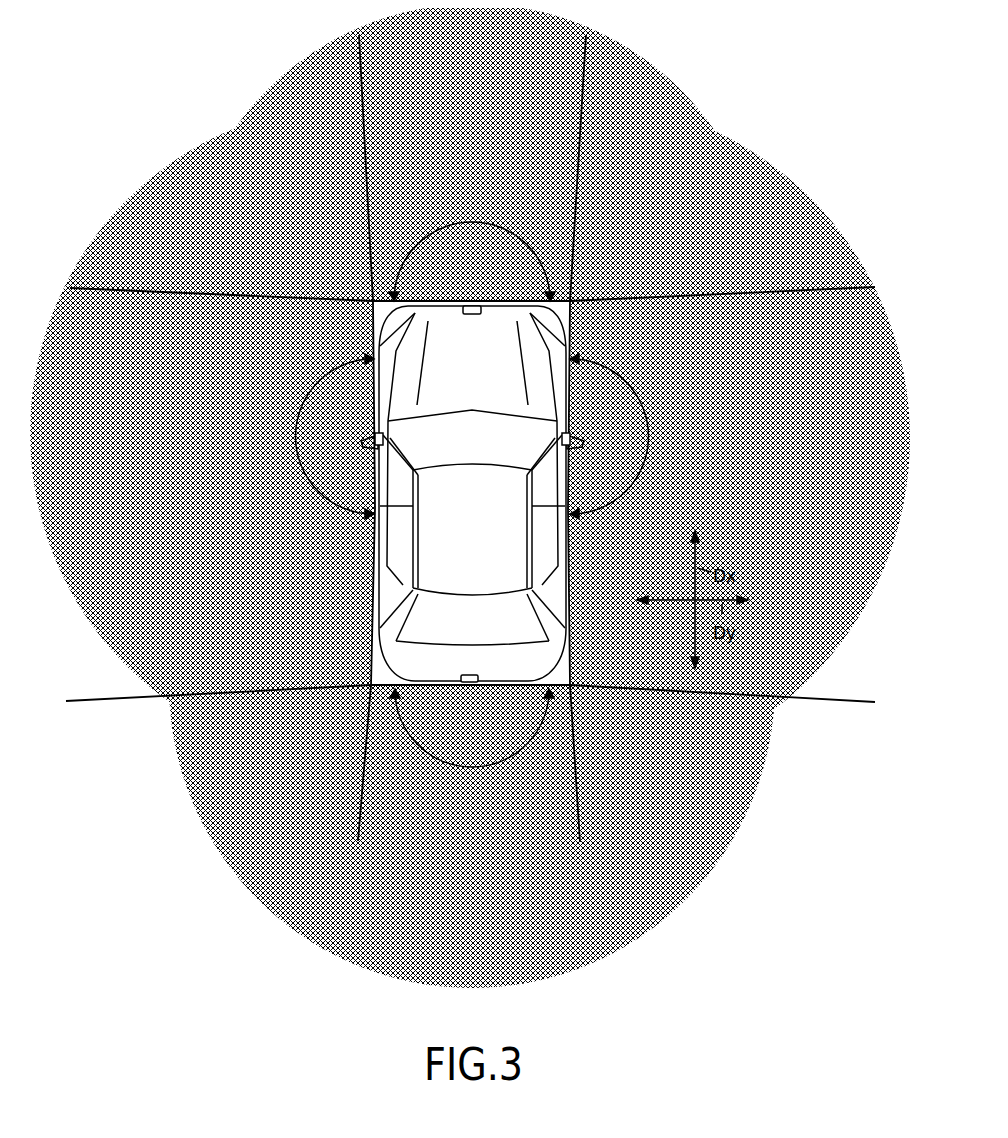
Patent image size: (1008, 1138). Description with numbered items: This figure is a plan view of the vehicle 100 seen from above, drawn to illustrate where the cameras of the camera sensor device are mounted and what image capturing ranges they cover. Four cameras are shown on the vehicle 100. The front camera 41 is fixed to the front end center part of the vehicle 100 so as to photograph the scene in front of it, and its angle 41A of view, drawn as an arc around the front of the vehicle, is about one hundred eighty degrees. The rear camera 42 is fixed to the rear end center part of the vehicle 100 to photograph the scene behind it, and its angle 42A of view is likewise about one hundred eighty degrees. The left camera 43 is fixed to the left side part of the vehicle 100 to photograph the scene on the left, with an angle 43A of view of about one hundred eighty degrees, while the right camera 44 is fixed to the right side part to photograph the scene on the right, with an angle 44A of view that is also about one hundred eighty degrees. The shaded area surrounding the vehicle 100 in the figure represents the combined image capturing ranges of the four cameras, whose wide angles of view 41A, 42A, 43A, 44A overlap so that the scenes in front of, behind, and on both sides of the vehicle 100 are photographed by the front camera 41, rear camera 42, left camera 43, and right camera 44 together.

The front camera 41 is at (462, 306).
The rear camera 42 is at (462, 665).
The left camera 43 is at (376, 430).
The right camera 44 is at (553, 430).
The angle of view of the front camera 41A is at (472, 253).
The angle of view of the rear camera 42A is at (472, 737).
The angle of view of the left camera 43A is at (317, 436).
The angle of view of the right camera 44A is at (627, 436).
The vehicle 100 is at (563, 527).